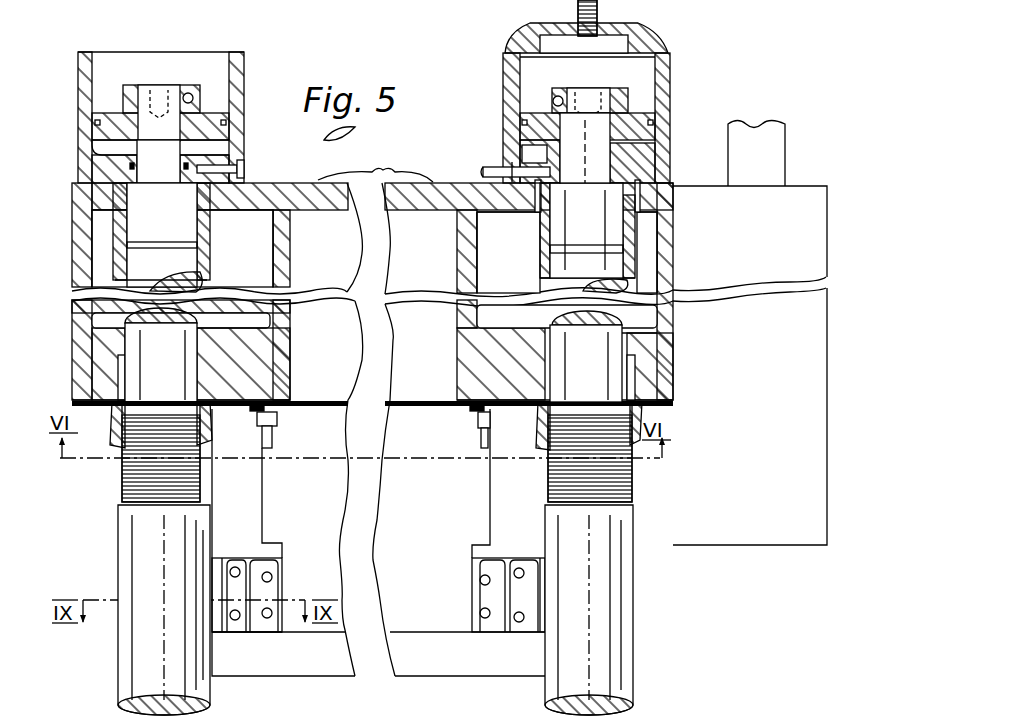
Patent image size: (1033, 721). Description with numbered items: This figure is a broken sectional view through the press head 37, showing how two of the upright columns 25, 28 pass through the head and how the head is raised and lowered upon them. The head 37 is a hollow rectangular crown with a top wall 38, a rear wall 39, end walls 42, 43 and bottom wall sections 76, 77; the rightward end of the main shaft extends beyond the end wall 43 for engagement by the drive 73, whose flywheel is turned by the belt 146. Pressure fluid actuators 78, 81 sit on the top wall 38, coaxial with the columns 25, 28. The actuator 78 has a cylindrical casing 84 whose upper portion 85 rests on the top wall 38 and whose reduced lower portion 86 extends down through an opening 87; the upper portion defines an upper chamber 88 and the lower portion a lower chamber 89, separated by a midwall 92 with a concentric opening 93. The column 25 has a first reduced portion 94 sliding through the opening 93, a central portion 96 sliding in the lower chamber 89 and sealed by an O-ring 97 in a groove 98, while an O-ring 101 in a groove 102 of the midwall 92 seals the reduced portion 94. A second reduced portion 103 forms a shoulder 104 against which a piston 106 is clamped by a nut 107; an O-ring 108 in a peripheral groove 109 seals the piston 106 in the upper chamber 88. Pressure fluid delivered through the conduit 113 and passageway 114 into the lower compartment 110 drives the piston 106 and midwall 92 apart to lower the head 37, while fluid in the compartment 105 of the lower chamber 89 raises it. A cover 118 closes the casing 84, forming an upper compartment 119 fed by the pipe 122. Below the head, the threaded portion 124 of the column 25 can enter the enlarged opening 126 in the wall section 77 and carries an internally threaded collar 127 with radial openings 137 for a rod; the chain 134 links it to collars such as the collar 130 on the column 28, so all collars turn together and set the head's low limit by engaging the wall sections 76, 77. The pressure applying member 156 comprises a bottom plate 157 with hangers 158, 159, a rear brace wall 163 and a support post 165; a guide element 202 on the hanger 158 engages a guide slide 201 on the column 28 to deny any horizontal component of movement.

The column 25 is at (636, 606).
The column 28 is at (117, 662).
The head 37 is at (72, 334).
The top wall 38 is at (262, 184).
The rear wall 39 is at (332, 429).
The end wall 42 is at (72, 240).
The end wall 43 is at (668, 252).
The drive 73 is at (786, 140).
The bottom wall section 76 is at (288, 363).
The bottom wall section 77 is at (462, 345).
The pressure fluid actuator 78 is at (673, 78).
The pressure fluid actuator 81 is at (246, 76).
The cylindrical casing 84 is at (652, 135).
The upper portion 85 is at (662, 108).
The lower portion 86 is at (632, 232).
The opening 87 is at (546, 212).
The upper chamber 88 is at (670, 56).
The lower chamber 89 is at (618, 265).
The midwall 92 is at (642, 165).
The opening 93 is at (657, 180).
The first reduced portion 94 is at (546, 236).
The central portion 96 is at (556, 335).
The O-ring 97 is at (589, 238).
The groove 98 is at (586, 260).
The O-ring 101 is at (585, 148).
The groove 102 is at (560, 185).
The second reduced portion 103 is at (606, 76).
The shoulder 104 is at (612, 125).
The compartment 105 is at (642, 206).
The piston 106 is at (522, 119).
The nut 107 is at (557, 94).
The O-ring 108 is at (522, 128).
The peripheral groove 109 is at (520, 133).
The lower compartment 110 is at (648, 150).
The conduit 113 is at (484, 166).
The passageway 114 is at (558, 212).
The cover 118 is at (532, 30).
The upper compartment 119 is at (640, 62).
The pipe 122 is at (577, 9).
The threaded portion 124 is at (622, 468).
The opening 126 is at (667, 346).
The collar 127 is at (645, 413).
The collar 130 is at (120, 424).
The chain 134 is at (392, 412).
The openings 137 is at (540, 428).
The belt 146 is at (745, 126).
The pressure applying member 156 is at (318, 676).
The bottom plate 157 is at (455, 676).
The hanger 158 is at (263, 474).
The hanger 159 is at (490, 515).
The rear brace wall 163 is at (408, 429).
The support post 165 is at (492, 472).
The guide slide 201 is at (216, 625).
The guide element 202 is at (238, 558).